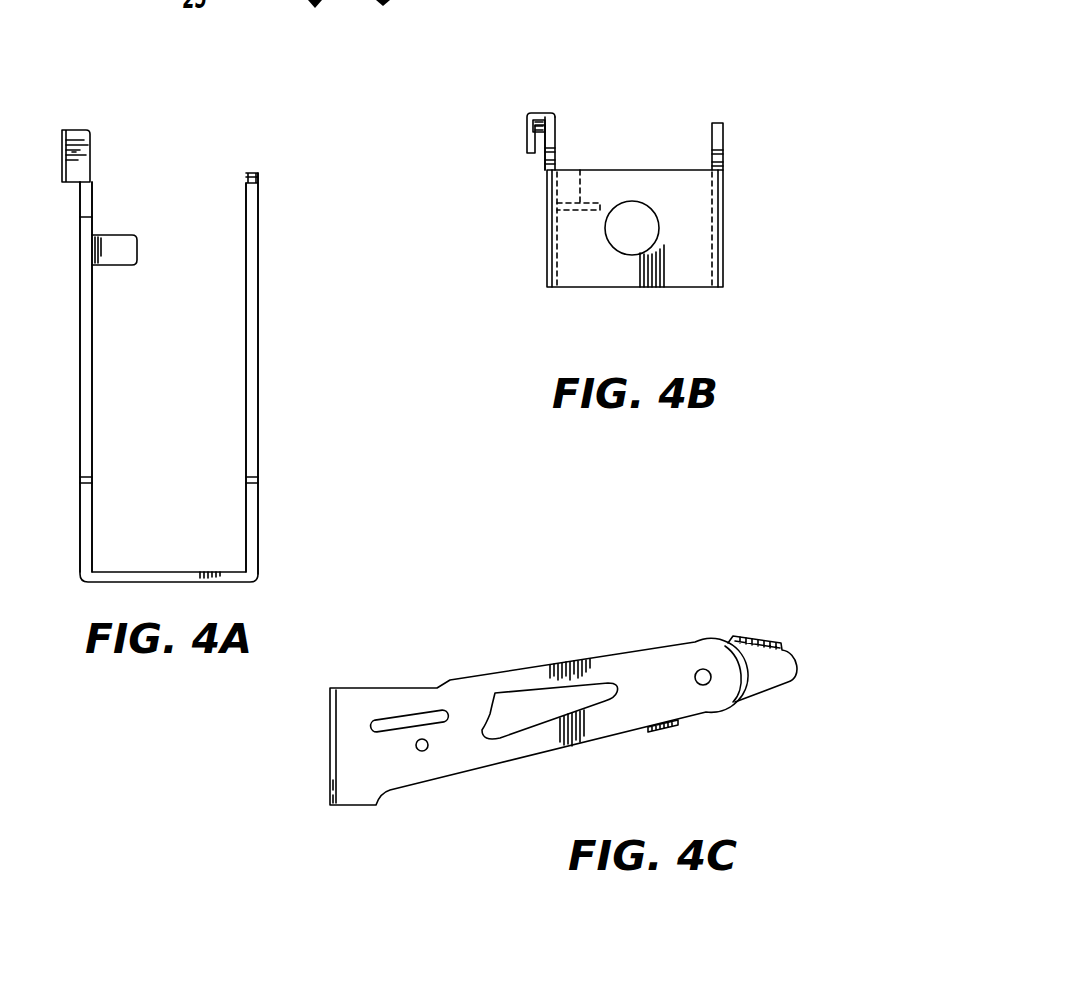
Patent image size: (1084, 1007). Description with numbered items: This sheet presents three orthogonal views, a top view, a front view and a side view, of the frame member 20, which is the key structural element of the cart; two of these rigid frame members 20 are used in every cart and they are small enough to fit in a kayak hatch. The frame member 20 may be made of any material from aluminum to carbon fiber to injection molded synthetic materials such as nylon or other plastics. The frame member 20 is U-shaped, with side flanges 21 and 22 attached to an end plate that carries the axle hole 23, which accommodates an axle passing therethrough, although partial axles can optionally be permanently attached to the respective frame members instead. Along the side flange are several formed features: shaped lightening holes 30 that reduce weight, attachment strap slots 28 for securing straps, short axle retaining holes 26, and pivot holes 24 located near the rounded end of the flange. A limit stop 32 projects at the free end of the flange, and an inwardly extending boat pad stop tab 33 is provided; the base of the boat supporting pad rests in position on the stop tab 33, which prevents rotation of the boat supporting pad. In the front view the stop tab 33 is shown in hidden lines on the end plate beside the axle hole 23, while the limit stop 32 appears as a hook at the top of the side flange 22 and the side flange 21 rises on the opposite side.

In FIG. 4A, the frame member 20 is at (216, 356).
In FIG. 4B, the frame member 20 is at (643, 170).
In FIG. 4C, the frame member 20 is at (572, 649).
In FIG. 4A, the side flange 21 is at (252, 357).
In FIG. 4B, the side flange 21 is at (723, 237).
In FIG. 4C, the side flange 21 is at (607, 722).
In FIG. 4A, the side flange 22 is at (87, 357).
In FIG. 4B, the side flange 22 is at (545, 240).
In FIG. 4C, the side flange 22 is at (760, 680).
In FIG. 4B, the axle hole 23 is at (630, 228).
In FIG. 4C, the pivot hole 24 is at (700, 670).
In FIG. 4C, the short axle retaining hole 26 is at (427, 752).
In FIG. 4C, the attachment strap slot 28 is at (392, 725).
In FIG. 4C, the lightening hole 30 is at (517, 710).
In FIG. 4A, the limit stop 32 is at (82, 165).
In FIG. 4B, the limit stop 32 is at (528, 118).
In FIG. 4C, the limit stop 32 is at (767, 642).
In FIG. 4A, the boat pad stop tab 33 is at (122, 248).
In FIG. 4B, the boat pad stop tab 33 is at (578, 177).
In FIG. 4C, the boat pad stop tab 33 is at (677, 727).